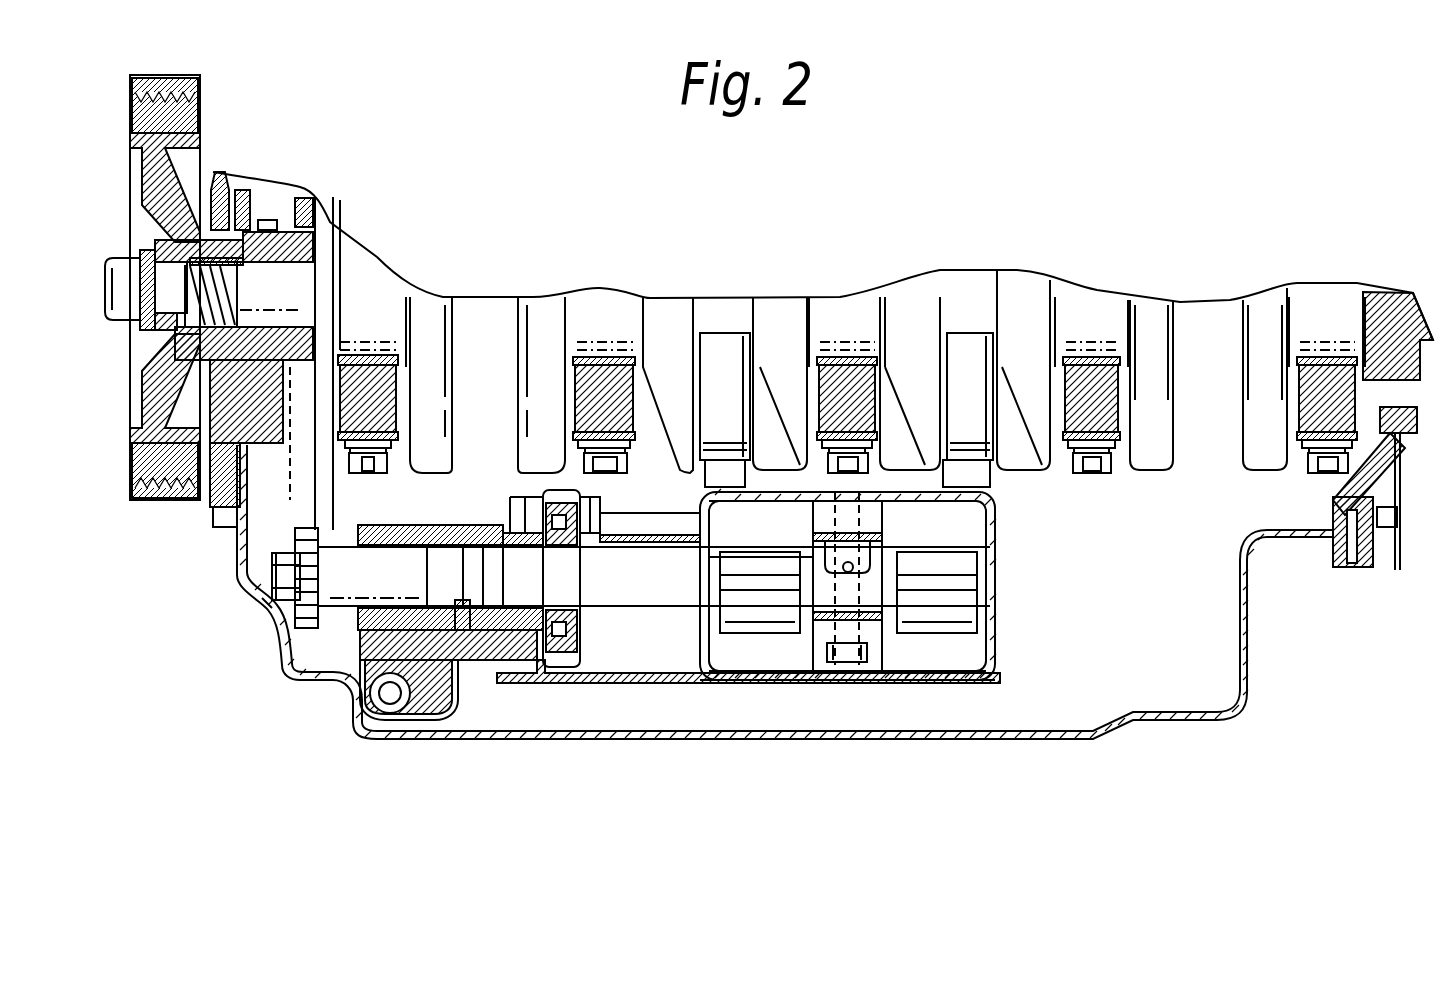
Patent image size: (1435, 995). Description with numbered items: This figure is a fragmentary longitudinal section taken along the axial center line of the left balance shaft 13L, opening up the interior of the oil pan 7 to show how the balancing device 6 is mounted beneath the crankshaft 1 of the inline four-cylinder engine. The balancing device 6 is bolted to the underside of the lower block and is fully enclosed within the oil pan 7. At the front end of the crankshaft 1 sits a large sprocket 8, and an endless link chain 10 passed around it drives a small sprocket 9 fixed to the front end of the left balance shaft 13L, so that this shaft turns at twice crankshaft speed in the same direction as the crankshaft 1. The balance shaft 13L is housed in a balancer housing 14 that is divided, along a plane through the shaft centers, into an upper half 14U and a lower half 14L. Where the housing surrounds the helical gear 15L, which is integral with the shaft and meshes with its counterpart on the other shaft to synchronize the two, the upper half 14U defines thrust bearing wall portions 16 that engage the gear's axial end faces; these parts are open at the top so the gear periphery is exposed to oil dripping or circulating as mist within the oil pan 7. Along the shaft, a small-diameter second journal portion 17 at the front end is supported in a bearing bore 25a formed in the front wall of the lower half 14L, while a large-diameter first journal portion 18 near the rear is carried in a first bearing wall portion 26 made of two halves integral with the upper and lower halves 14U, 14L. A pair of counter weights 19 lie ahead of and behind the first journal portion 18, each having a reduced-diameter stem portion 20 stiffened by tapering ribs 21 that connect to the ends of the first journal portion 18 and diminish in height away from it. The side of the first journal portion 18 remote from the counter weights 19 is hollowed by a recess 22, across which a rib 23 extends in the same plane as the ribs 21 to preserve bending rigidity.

The crankshaft 1 is at (377, 270).
The balancing device 6 is at (588, 685).
The oil pan 7 is at (1255, 635).
The large sprocket 8 is at (300, 207).
The small sprocket 9 is at (278, 620).
The endless link chain 10 is at (292, 523).
The left balance shaft 13L is at (681, 607).
The balancer housing 14 is at (918, 584).
The upper half of balancer housing 14U is at (885, 584).
The lower half of balancer housing 14L is at (1005, 665).
The helical gear 15L is at (578, 643).
The thrust bearing wall portion 16 is at (553, 550).
The second journal portion 17 is at (440, 530).
The first journal portion 18 is at (823, 620).
The counter weight 19 is at (745, 628).
The stem portion 20 is at (737, 565).
The tapering rib 21 is at (797, 550).
The recess 22 is at (867, 557).
The rib 23 is at (837, 557).
The bearing bore 25a is at (463, 597).
The first bearing wall portion 26 is at (867, 613).